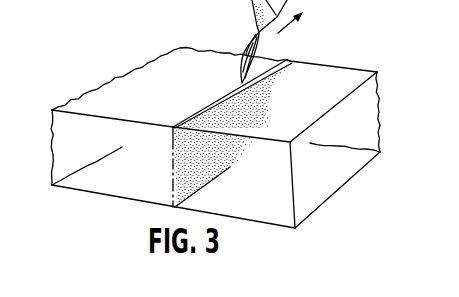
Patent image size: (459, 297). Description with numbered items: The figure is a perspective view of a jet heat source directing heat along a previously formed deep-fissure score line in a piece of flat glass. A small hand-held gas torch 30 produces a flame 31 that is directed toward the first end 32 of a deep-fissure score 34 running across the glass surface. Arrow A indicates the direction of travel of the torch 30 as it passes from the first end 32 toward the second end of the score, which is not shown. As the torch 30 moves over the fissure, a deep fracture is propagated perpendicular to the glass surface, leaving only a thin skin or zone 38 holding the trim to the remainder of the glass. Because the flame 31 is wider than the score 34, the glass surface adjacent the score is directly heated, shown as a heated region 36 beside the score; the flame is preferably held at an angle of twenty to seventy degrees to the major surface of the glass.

The hand-held gas torch 30 is at (255, 2).
The flame 31 is at (243, 50).
The first end 32 is at (172, 127).
The deep-fissure score 34 is at (210, 102).
The heated zone on top surface 36 is at (250, 108).
The zone 38 is at (209, 186).
The direction of travel A is at (295, 30).